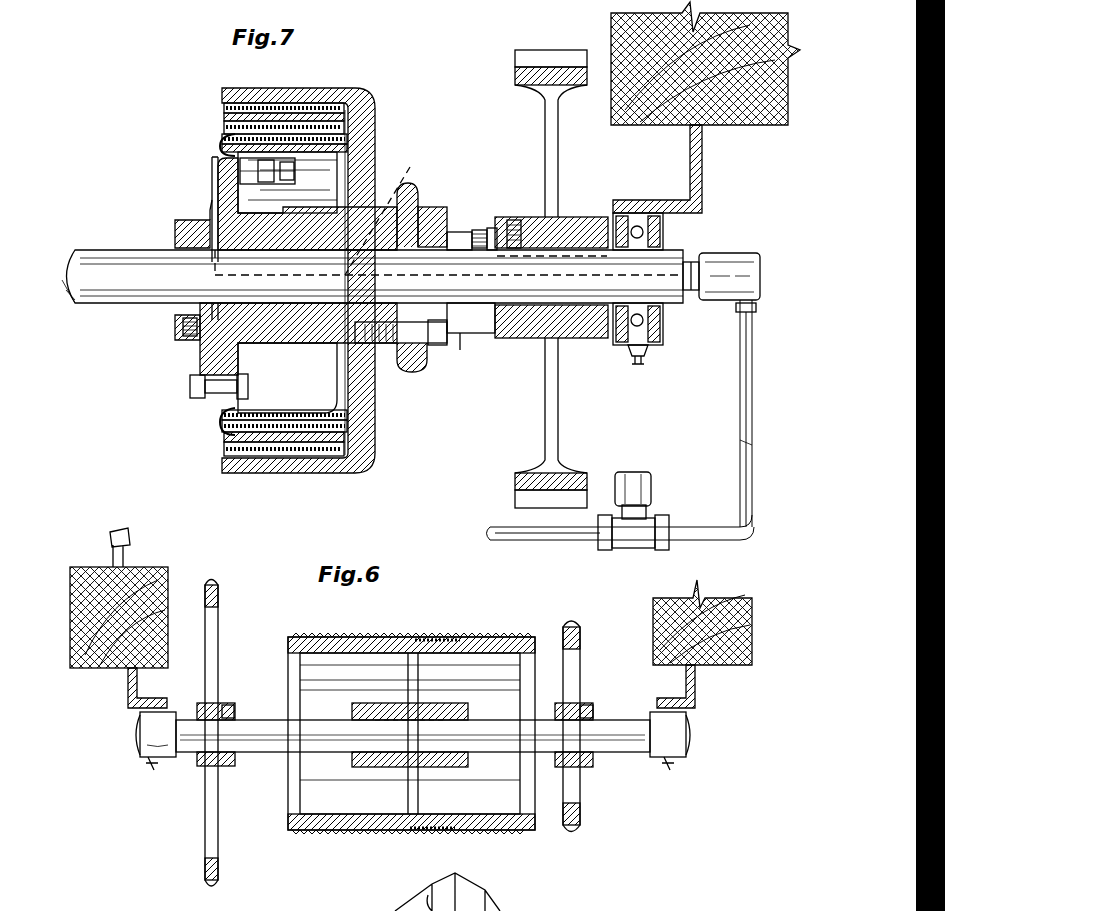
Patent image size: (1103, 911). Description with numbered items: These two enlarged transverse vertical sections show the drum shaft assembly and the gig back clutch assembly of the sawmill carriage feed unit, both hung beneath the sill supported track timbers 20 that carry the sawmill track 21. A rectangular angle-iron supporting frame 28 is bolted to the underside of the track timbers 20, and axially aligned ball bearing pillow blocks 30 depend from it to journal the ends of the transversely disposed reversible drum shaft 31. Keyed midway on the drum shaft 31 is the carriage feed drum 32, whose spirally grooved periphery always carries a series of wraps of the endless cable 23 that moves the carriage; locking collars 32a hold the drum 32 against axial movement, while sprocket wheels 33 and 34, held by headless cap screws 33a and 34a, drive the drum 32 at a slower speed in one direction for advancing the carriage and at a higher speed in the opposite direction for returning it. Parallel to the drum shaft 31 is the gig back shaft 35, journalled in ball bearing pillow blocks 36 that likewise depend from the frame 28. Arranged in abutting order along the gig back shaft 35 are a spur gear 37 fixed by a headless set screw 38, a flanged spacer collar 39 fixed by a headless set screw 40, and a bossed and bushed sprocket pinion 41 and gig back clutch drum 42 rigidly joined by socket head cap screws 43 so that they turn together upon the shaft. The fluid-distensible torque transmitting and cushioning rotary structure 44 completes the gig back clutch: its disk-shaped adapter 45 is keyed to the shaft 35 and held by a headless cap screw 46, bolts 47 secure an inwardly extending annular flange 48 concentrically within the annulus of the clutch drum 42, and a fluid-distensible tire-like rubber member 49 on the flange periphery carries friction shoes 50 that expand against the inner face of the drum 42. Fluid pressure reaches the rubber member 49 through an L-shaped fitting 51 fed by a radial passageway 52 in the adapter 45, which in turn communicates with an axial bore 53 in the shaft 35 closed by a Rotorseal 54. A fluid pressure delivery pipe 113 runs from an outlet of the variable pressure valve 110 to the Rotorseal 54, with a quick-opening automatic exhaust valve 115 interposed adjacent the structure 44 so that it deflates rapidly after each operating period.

In FIG. 7, the track timbers 20 is at (748, 122).
In FIG. 6, the track timbers 20 is at (70, 638).
In FIG. 6, the sawmill track 21 is at (110, 536).
In FIG. 6, the endless cable 23 is at (437, 640).
In FIG. 7, the supporting frame 28 is at (703, 185).
In FIG. 6, the supporting frame 28 is at (128, 686).
In FIG. 6, the ball bearing pillow blocks 30 is at (140, 750).
In FIG. 6, the drum shaft 31 is at (266, 735).
In FIG. 6, the carriage feed drum 32 is at (483, 637).
In FIG. 6, the locking collars 32a is at (478, 773).
In FIG. 6, the sprocket wheel 33 is at (210, 818).
In FIG. 6, the headless cap screw 33a is at (228, 705).
In FIG. 6, the sprocket wheel 34 is at (580, 799).
In FIG. 6, the headless cap screw 34a is at (588, 705).
In FIG. 7, the gig back shaft 35 is at (95, 262).
In FIG. 7, the ball bearing pillow blocks 36 is at (648, 347).
In FIG. 7, the spur gear 37 is at (580, 435).
In FIG. 7, the headless set screw 38 is at (510, 220).
In FIG. 7, the flanged spacer collar 39 is at (476, 333).
In FIG. 7, the headless set screw 40 is at (478, 230).
In FIG. 7, the sprocket pinion 41 is at (412, 208).
In FIG. 7, the gig back clutch drum 42 is at (370, 432).
In FIG. 7, the socket head cap screws 43 is at (417, 350).
In FIG. 7, the fluid-distensible torque transmitting and cushioning rotary structure 44 is at (210, 128).
In FIG. 7, the adapter 45 is at (210, 198).
In FIG. 7, the headless cap screw 46 is at (182, 338).
In FIG. 7, the bolts 47 is at (190, 386).
In FIG. 7, the annular flange 48 is at (268, 412).
In FIG. 7, the fluid-distensible tire-like rubber member 49 is at (222, 425).
In FIG. 7, the clutching or friction shoes 50 is at (224, 103).
In FIG. 7, the L-shaped fitting 51 is at (290, 172).
In FIG. 7, the passageway 52 is at (212, 178).
In FIG. 7, the axial bore 53 is at (389, 212).
In FIG. 7, the Rotorseal 54 is at (735, 262).
In FIG. 6, the variable pressure valve 110 is at (555, 910).
In FIG. 7, the fluid pressure delivery pipe 113 is at (502, 527).
In FIG. 7, the quick-opening automatic exhaust valve 115 is at (648, 488).